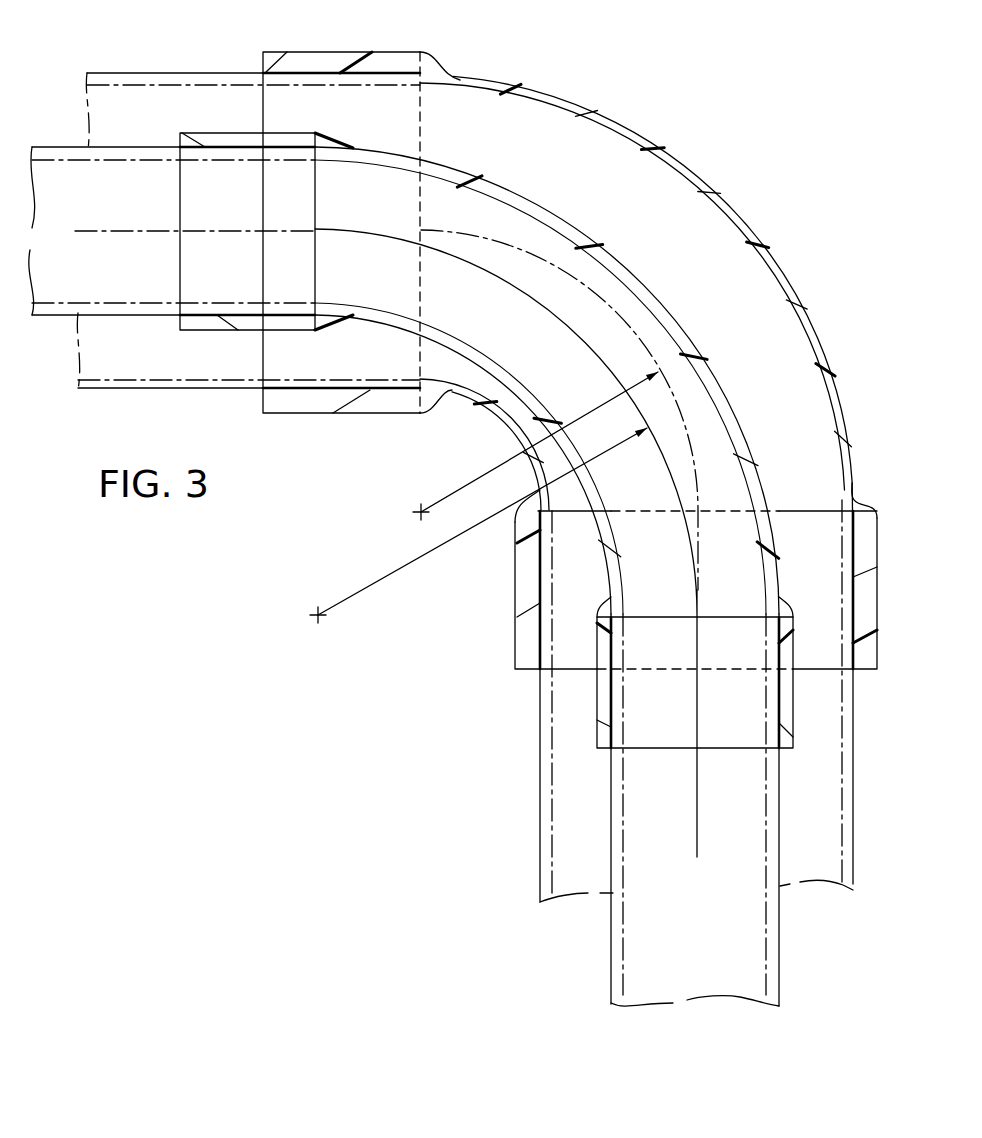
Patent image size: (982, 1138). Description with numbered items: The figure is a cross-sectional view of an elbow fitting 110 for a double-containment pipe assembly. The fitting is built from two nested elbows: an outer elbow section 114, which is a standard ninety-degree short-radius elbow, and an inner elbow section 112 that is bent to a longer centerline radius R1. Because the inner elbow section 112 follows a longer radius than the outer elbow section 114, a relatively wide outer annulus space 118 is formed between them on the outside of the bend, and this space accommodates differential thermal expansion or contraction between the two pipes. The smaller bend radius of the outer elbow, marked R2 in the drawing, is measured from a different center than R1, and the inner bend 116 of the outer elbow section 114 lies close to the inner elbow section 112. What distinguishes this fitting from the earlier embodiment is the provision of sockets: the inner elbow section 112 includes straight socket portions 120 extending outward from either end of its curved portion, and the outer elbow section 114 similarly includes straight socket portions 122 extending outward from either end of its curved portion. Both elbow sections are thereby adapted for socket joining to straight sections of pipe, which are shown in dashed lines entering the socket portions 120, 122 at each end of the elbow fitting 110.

The elbow fitting 110 is at (665, 120).
The inner elbow section 112 is at (677, 320).
The outer elbow section 114 is at (815, 330).
The inner bend of outer elbow 116 is at (525, 420).
The outer annulus space 118 is at (712, 242).
The straight socket portions 120 is at (203, 333).
The straight socket portions 122 is at (345, 52).
The centerline radius R1 is at (452, 555).
The bend radius of outer pipe R2 is at (488, 476).